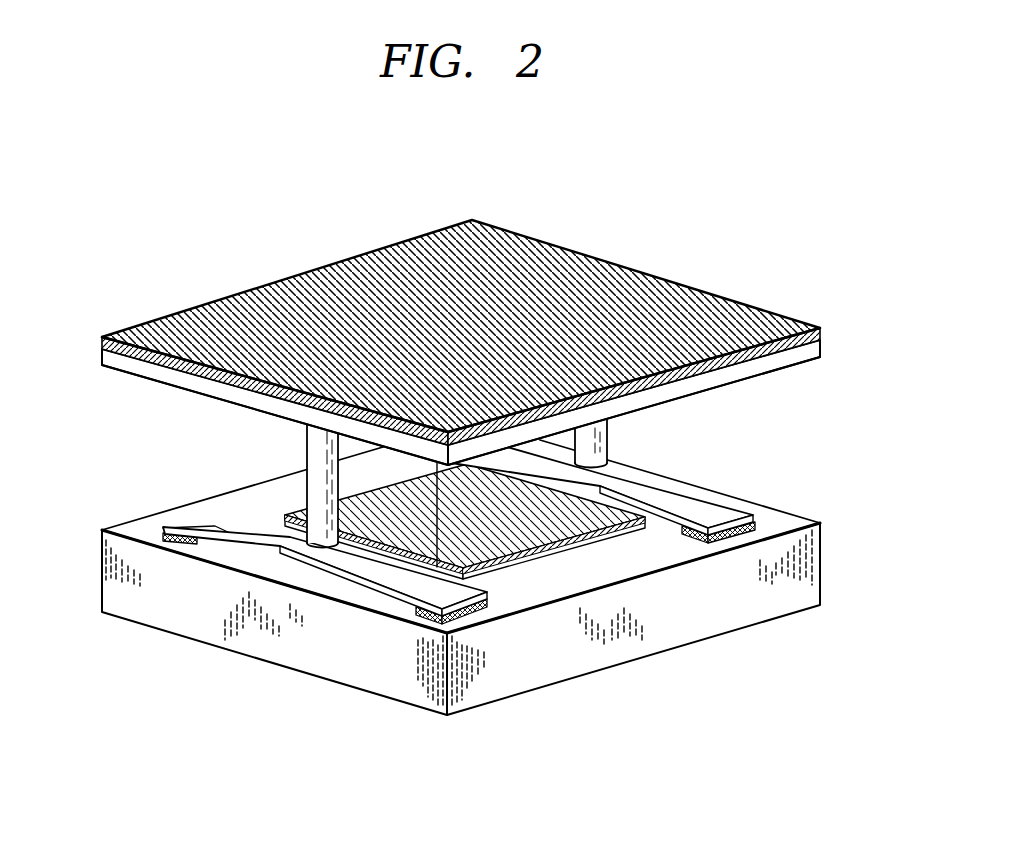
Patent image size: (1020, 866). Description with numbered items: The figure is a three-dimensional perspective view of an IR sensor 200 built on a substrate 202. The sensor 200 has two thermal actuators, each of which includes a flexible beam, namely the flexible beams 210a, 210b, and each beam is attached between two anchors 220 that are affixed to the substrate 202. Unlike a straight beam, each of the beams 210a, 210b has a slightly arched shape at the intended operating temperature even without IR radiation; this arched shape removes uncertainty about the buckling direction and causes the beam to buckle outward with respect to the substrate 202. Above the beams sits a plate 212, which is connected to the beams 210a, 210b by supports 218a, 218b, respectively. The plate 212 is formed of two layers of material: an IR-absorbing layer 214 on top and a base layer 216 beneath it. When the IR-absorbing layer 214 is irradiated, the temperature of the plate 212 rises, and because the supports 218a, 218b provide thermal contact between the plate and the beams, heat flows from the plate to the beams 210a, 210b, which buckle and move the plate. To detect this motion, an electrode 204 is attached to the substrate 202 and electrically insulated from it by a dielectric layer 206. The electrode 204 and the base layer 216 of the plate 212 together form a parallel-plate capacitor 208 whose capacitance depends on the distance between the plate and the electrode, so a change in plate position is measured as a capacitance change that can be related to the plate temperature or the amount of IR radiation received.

The IR sensor 200 is at (480, 139).
The substrate 202 is at (425, 690).
The electrode 204 is at (470, 521).
The dielectric layer 206 is at (578, 545).
The parallel-plate capacitor 208 is at (408, 515).
The flexible beam 210a is at (652, 481).
The flexible beam 210b is at (232, 520).
The plate 212 is at (503, 331).
The IR-absorbing layer 214 is at (700, 293).
The base layer 216 is at (823, 346).
The support 218a is at (608, 432).
The support 218b is at (307, 438).
The anchor 220 is at (163, 533).